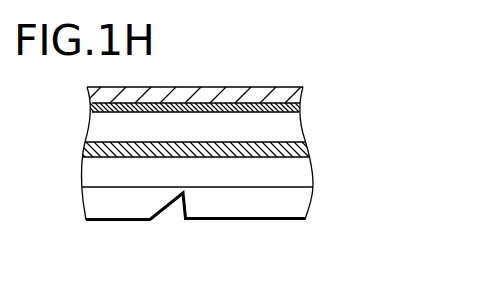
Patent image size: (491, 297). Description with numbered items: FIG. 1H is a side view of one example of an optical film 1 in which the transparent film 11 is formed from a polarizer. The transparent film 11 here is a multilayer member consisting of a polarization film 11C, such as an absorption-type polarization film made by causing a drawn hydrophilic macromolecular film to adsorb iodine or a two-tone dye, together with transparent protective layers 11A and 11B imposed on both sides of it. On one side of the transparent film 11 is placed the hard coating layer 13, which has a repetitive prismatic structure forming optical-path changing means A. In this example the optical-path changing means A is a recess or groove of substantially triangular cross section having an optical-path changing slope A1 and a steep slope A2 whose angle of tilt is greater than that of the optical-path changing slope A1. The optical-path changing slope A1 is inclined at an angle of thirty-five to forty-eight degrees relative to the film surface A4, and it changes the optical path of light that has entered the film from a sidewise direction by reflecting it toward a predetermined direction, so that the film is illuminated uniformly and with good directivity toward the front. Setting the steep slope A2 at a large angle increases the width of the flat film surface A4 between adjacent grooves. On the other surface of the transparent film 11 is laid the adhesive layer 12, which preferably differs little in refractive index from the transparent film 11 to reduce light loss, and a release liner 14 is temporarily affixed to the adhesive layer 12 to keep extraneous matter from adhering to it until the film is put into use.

The optical film 1 is at (296, 73).
The transparent film 11 is at (243, 159).
The transparent protective layer 11A is at (293, 176).
The transparent protective layer 11B is at (292, 131).
The polarization film 11C is at (305, 150).
The adhesive layer 12 is at (297, 108).
The hard coating layer 13 is at (295, 210).
The release liner 14 is at (300, 92).
The optical-path changing means A is at (172, 220).
The optical-path changing slope A1 is at (158, 219).
The steep slope A2 is at (185, 199).
The film surface A4 is at (243, 220).